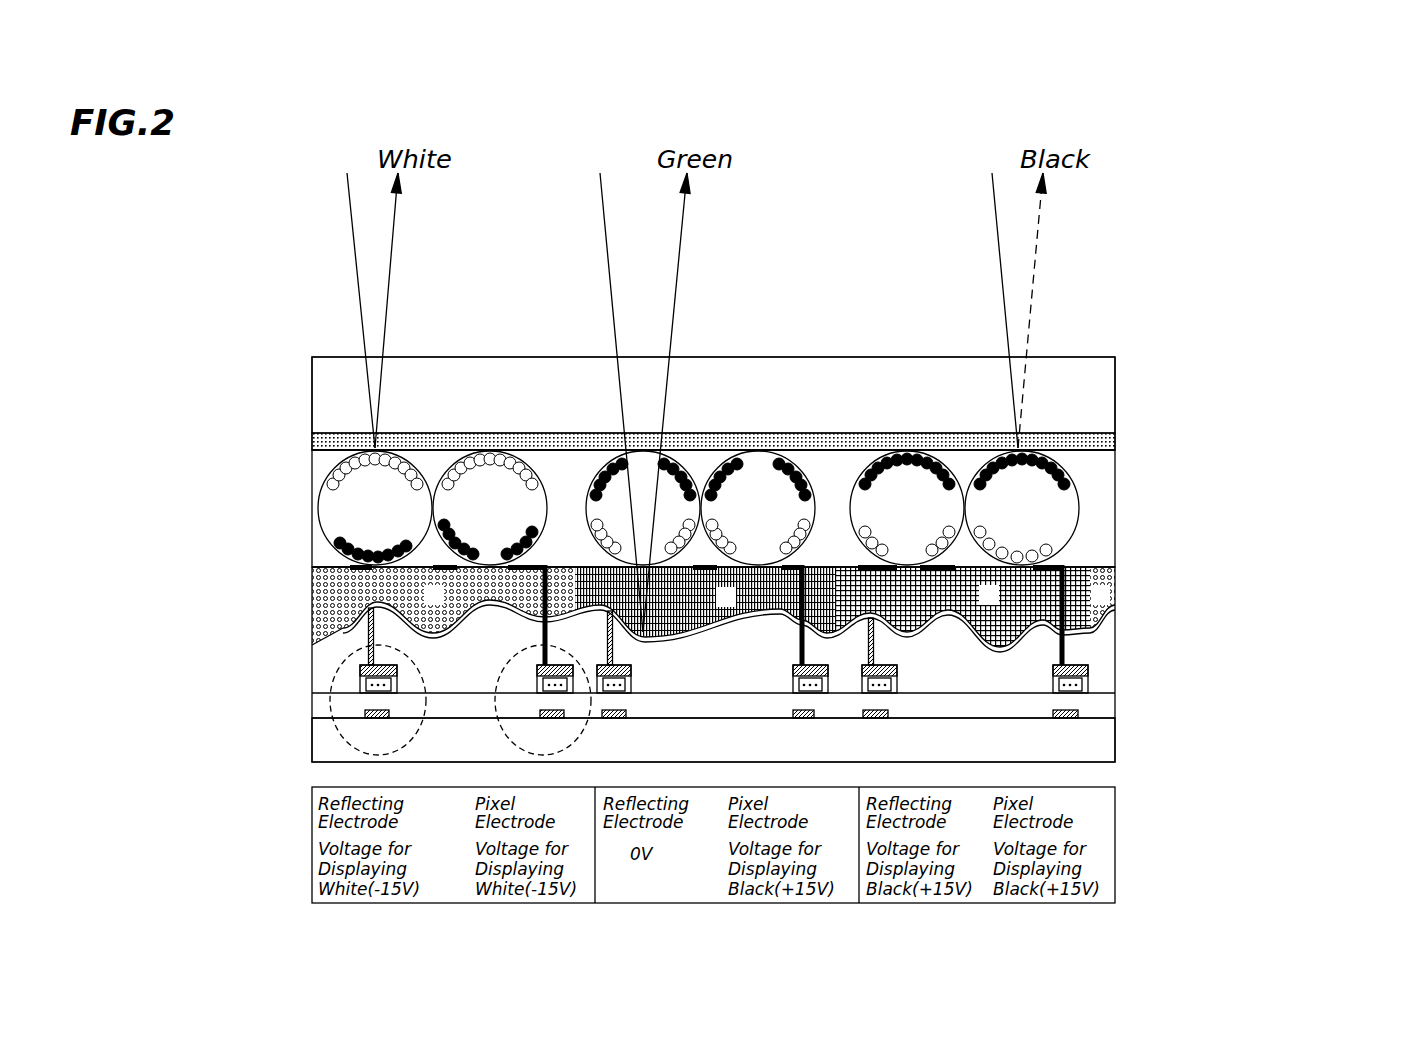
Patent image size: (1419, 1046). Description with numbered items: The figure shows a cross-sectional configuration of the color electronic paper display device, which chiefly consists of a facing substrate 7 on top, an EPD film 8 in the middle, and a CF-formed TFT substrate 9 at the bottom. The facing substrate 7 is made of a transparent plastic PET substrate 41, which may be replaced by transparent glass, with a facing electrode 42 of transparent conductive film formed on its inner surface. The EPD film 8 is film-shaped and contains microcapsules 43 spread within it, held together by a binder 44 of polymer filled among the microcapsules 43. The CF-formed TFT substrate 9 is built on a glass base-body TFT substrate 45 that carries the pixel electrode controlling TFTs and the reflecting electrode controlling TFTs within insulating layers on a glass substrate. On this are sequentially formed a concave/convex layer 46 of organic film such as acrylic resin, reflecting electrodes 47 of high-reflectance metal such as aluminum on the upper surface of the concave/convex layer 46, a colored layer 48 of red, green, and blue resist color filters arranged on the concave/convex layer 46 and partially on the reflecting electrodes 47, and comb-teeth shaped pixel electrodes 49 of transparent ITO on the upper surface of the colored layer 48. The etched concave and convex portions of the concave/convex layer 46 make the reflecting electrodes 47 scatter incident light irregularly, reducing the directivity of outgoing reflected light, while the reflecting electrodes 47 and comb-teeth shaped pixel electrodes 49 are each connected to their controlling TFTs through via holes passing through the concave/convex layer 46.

The facing substrate 7 is at (307, 450).
The EPD film 8 is at (307, 452).
The CF-formed TFT substrate 9 is at (283, 663).
The PET substrate 41 is at (1115, 373).
The facing electrode 42 is at (1115, 437).
The microcapsules 43 is at (322, 537).
The binder 44 is at (322, 447).
The glass base-body TFT substrate 45 is at (1122, 690).
The concave/convex layer 46 is at (1097, 665).
The reflecting electrodes 47 is at (1093, 640).
The colored layer 48 is at (1115, 593).
The comb-teeth shaped pixel electrodes 49 is at (1067, 562).